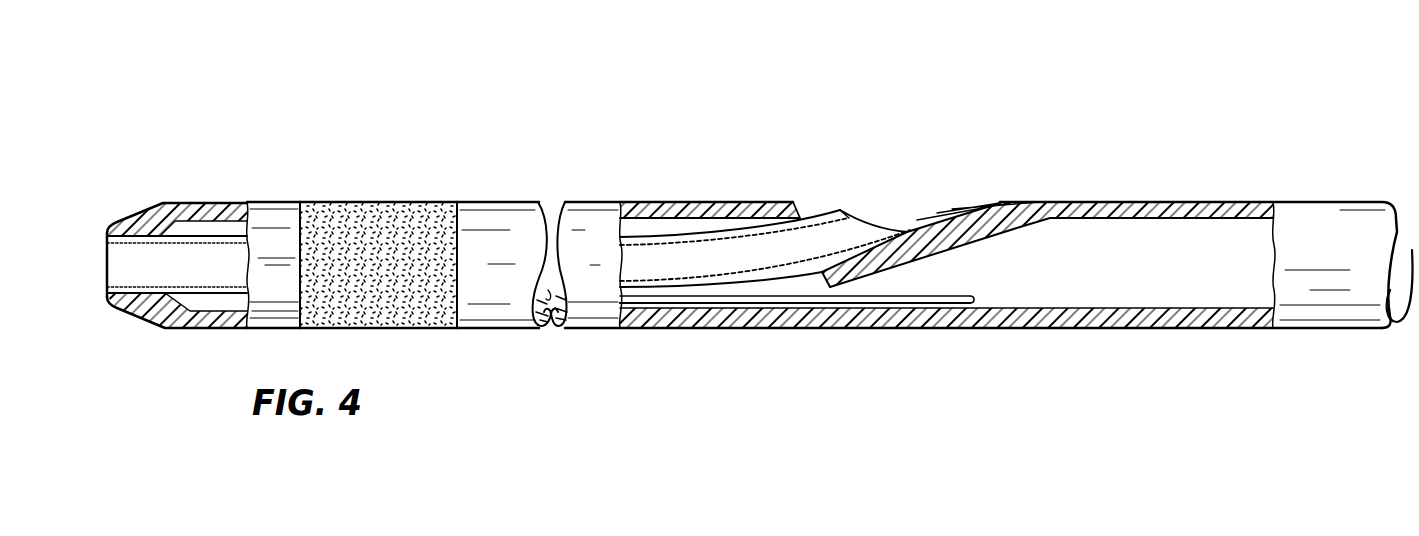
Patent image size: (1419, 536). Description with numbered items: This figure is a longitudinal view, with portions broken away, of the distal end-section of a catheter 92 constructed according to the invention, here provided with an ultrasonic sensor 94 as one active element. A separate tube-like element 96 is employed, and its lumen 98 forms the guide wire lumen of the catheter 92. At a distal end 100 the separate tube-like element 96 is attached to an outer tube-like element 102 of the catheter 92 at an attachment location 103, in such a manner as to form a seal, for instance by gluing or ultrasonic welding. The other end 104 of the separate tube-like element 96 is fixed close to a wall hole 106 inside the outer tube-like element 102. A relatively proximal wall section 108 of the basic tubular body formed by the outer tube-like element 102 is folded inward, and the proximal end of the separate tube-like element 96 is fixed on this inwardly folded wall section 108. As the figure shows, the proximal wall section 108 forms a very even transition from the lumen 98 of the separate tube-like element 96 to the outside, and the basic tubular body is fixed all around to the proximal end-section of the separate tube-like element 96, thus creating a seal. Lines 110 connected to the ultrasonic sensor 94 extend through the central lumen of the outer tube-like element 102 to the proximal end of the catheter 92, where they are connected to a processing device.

The catheter 92 is at (1083, 194).
The ultrasonic sensor 94 is at (400, 218).
The separate tube-like element 96 is at (835, 211).
The lumen 98 is at (868, 246).
The distal end 100 is at (115, 253).
The outer tube-like element 102 is at (215, 202).
The attachment location 103 is at (150, 238).
The other end 104 is at (812, 207).
The wall hole 106 is at (796, 216).
The proximal wall section 108 is at (922, 254).
The lines 110 is at (785, 298).